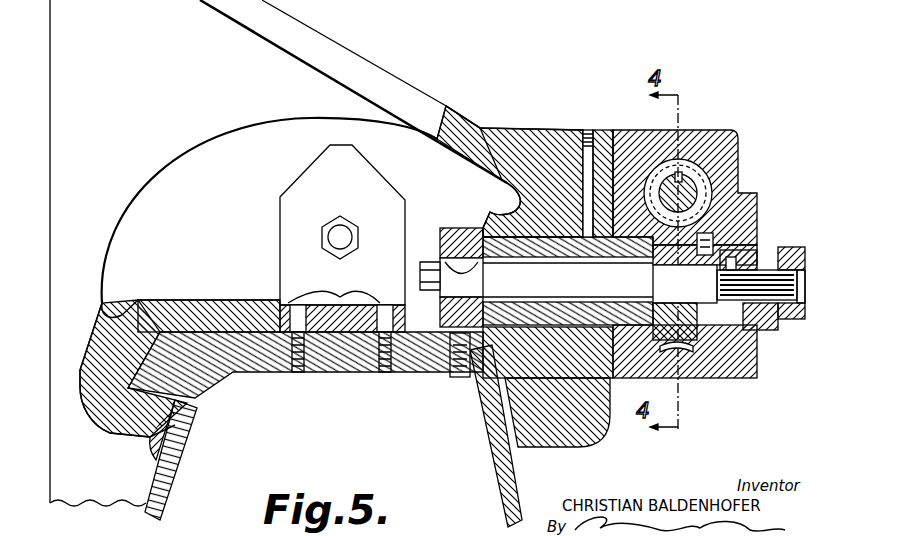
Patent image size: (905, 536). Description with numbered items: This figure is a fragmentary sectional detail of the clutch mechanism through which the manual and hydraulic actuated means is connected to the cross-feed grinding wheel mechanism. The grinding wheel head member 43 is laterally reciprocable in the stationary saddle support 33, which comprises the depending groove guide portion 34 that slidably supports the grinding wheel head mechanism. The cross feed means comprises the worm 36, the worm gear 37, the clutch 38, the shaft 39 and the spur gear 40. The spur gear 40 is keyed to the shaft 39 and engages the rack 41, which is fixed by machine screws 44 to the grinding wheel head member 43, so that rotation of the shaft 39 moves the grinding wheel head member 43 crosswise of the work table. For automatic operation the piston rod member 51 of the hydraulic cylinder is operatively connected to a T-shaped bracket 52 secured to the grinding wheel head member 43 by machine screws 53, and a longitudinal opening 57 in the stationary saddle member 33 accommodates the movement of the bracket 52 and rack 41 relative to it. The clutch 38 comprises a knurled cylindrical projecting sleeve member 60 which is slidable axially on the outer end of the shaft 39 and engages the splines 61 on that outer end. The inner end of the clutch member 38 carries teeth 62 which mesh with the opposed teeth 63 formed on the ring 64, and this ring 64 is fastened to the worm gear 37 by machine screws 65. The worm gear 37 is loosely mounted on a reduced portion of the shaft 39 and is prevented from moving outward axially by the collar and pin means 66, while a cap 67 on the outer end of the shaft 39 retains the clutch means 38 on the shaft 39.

The saddle support 33 is at (100, 415).
The depending groove guide portion 34 is at (152, 428).
The worm 36 is at (690, 178).
The worm gear 37 is at (680, 392).
The clutch 38 is at (735, 380).
The shaft 39 is at (498, 262).
The spur gear 40 is at (447, 255).
The rack 41 is at (446, 345).
The grinding wheel head member 43 is at (338, 372).
The machine screws 44 is at (458, 385).
The piston rod member 51 is at (340, 226).
The T-shaped bracket 52 is at (280, 257).
The machine screws 53 is at (334, 288).
The longitudinal opening 57 is at (412, 325).
The knurled cylindrical projecting sleeve member 60 is at (790, 335).
The splines 61 is at (768, 330).
The teeth 62 is at (722, 253).
The teeth 63 is at (716, 366).
The ring 64 is at (700, 320).
The machine screws 65 is at (706, 235).
The collar and pin means 66 is at (733, 264).
The cap 67 is at (806, 320).